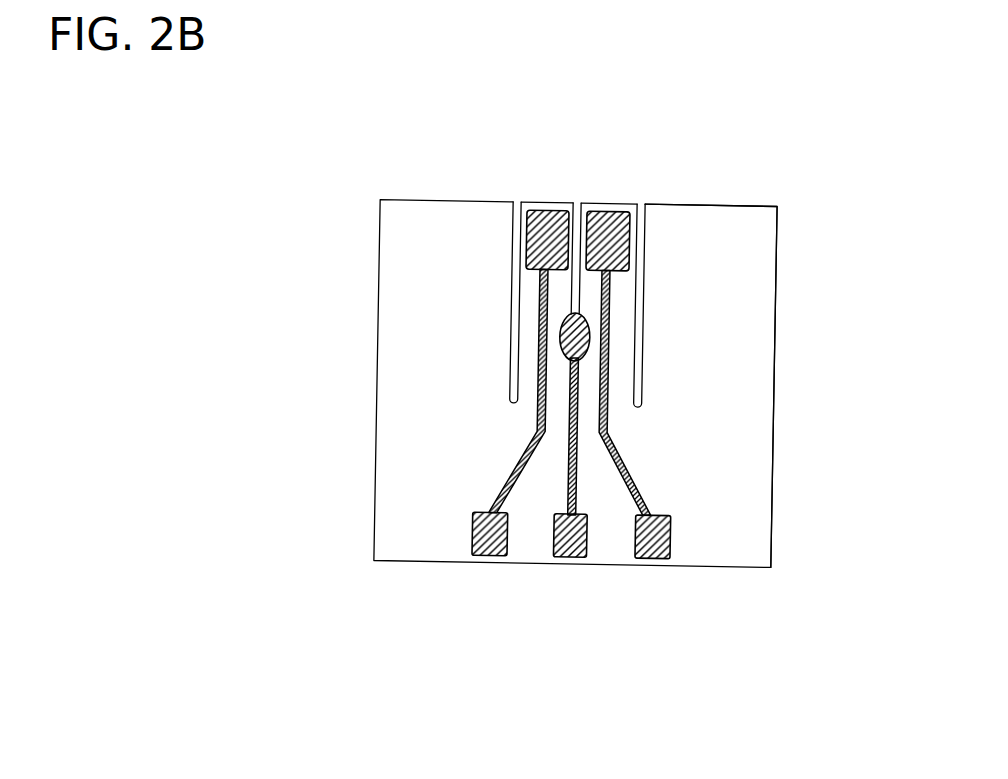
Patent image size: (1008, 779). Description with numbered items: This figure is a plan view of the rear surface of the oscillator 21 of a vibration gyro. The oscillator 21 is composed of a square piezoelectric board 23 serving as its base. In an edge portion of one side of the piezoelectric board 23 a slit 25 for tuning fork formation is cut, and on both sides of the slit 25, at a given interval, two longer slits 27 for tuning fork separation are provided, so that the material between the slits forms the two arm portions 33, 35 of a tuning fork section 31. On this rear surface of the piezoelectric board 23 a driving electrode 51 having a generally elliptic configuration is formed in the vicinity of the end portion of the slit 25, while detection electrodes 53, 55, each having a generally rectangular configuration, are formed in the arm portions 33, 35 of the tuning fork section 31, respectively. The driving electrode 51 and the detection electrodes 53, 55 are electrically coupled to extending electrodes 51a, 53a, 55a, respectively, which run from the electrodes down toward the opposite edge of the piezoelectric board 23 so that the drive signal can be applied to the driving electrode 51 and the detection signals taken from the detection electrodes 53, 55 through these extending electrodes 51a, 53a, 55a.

The oscillator 21 is at (388, 168).
The piezoelectric board 23 is at (720, 417).
The slit for tuning fork formation 25 is at (577, 198).
The slit for tuning fork separation 27 is at (525, 191).
The tuning fork section 31 is at (661, 262).
The arm portion 33 is at (607, 206).
The arm portion 35 is at (546, 206).
The driving electrode 51 is at (565, 352).
The detection electrode 53 is at (612, 243).
The detection electrode 55 is at (537, 247).
The extending electrode 51a is at (568, 558).
The extending electrode 53a is at (653, 558).
The extending electrode 55a is at (482, 557).